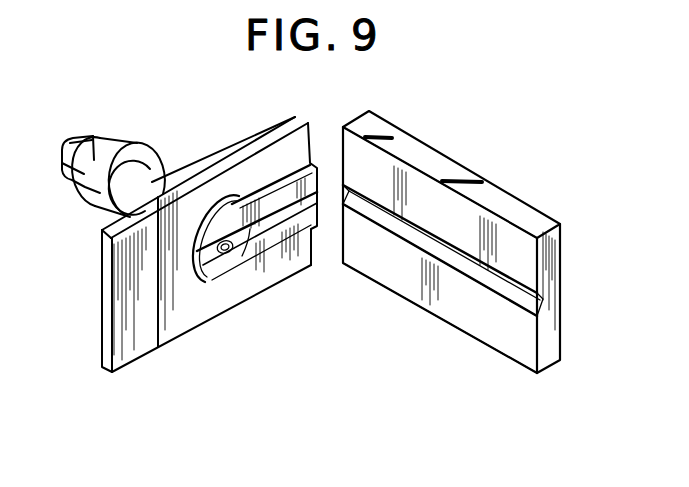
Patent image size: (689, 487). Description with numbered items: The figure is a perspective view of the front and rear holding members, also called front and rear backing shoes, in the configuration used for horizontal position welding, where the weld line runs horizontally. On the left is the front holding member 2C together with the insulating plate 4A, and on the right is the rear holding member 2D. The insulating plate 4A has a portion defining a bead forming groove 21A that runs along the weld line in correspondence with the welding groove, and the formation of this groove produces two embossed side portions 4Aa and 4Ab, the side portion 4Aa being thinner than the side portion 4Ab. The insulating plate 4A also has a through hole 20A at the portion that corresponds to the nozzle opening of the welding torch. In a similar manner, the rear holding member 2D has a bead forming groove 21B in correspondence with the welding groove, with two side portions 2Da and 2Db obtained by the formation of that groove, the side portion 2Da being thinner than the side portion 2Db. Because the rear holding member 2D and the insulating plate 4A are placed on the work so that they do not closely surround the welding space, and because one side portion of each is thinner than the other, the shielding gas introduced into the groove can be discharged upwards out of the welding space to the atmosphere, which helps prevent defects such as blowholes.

The front holding member 2C is at (217, 190).
The side portion 4Aa is at (273, 195).
The side portion 4Ab is at (212, 282).
The insulating plate 4A is at (265, 253).
The through hole 20A is at (235, 258).
The bead forming groove 21A is at (283, 216).
The rear holding member 2D is at (518, 205).
The side portion 2Da is at (432, 190).
The side portion 2Db is at (402, 282).
The bead forming groove 21B is at (470, 268).